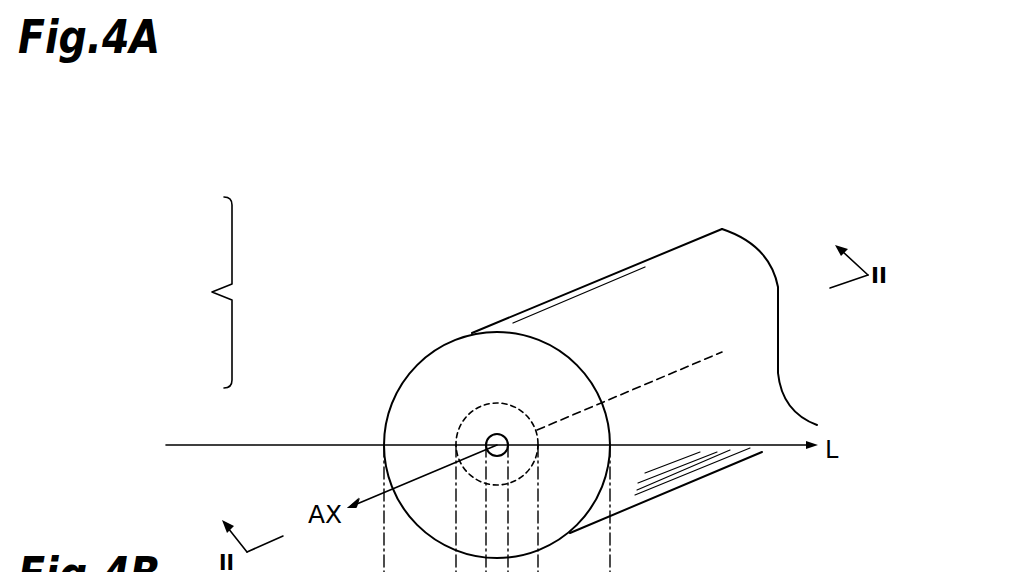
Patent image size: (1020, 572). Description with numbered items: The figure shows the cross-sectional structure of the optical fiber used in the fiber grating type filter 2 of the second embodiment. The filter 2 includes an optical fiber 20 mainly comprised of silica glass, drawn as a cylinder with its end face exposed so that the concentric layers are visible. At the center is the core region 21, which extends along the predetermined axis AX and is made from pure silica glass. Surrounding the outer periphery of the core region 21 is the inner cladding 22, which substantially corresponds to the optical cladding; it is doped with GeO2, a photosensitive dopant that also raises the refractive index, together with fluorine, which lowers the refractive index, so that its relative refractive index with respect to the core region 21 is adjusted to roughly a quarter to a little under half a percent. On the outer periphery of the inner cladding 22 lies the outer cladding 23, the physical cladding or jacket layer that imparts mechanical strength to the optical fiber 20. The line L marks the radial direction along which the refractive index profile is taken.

The fiber grating type filter 2 is at (678, 273).
The optical fiber 20 is at (201, 292).
The core region 21 is at (493, 441).
The inner cladding 22 is at (497, 403).
The outer cladding 23 is at (470, 368).